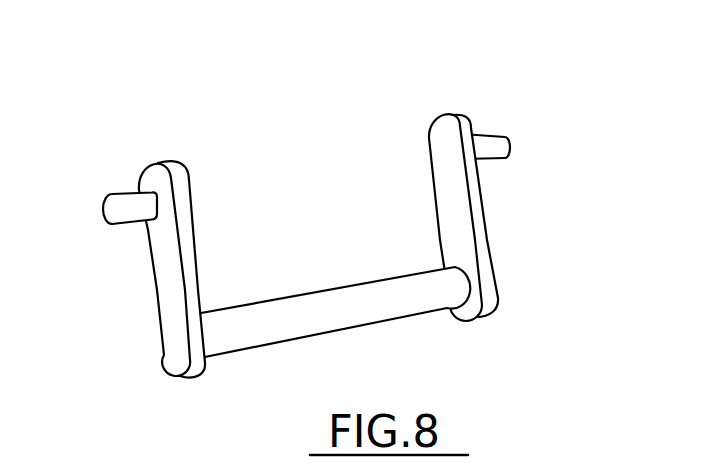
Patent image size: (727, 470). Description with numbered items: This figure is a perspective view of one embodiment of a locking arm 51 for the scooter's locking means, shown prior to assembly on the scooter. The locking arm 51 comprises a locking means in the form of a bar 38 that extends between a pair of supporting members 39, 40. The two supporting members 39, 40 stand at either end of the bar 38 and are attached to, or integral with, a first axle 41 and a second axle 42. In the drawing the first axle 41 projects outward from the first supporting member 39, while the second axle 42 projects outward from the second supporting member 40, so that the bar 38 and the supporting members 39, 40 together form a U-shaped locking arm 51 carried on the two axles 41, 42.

The bar 38 is at (383, 303).
The supporting member 39 is at (173, 300).
The supporting member 40 is at (480, 230).
The first axle 41 is at (130, 203).
The second axle 42 is at (500, 137).
The locking arm 51 is at (308, 238).